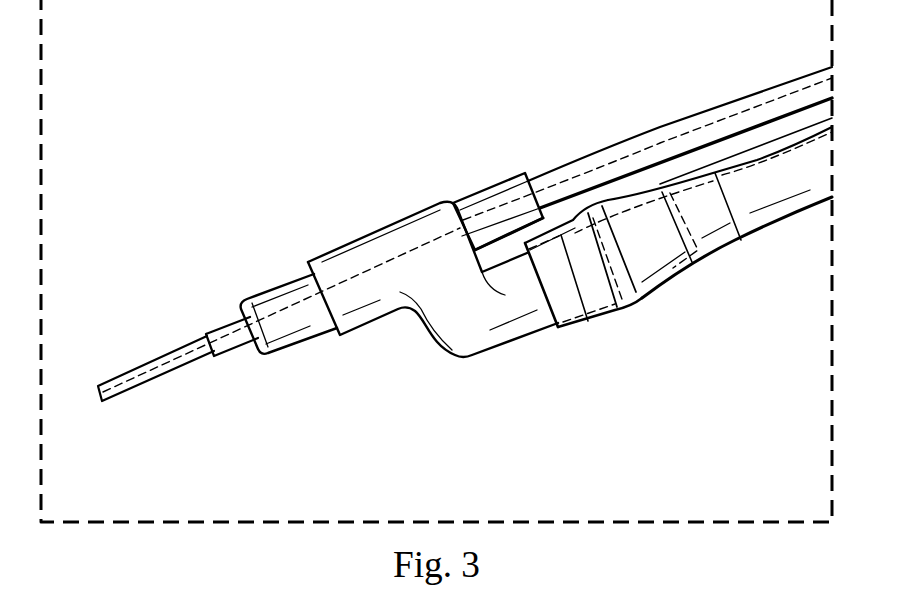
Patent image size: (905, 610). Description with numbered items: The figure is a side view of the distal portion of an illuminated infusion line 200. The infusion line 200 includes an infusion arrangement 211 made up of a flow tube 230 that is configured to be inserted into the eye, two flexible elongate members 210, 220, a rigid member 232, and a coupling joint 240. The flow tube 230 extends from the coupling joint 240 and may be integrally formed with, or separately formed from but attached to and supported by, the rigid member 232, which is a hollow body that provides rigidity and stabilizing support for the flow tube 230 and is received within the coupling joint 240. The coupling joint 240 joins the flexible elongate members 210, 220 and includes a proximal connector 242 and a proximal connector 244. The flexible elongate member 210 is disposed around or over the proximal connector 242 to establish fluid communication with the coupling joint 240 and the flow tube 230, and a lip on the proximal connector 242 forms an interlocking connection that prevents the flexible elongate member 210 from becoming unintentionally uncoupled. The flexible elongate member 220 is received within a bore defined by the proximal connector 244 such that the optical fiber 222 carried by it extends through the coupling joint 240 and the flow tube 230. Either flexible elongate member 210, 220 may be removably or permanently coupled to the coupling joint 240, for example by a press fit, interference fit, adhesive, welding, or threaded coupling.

The illuminated infusion line 200 is at (320, 103).
The flexible elongate member 210 is at (779, 226).
The infusion arrangement 211 is at (399, 376).
The flexible elongate member 220 is at (660, 126).
The optical fiber 222 is at (752, 109).
The flow tube 230 is at (152, 362).
The rigid member 232 is at (273, 279).
The coupling joint 240 is at (499, 346).
The proximal connector 242 is at (676, 284).
The proximal connector 244 is at (487, 187).